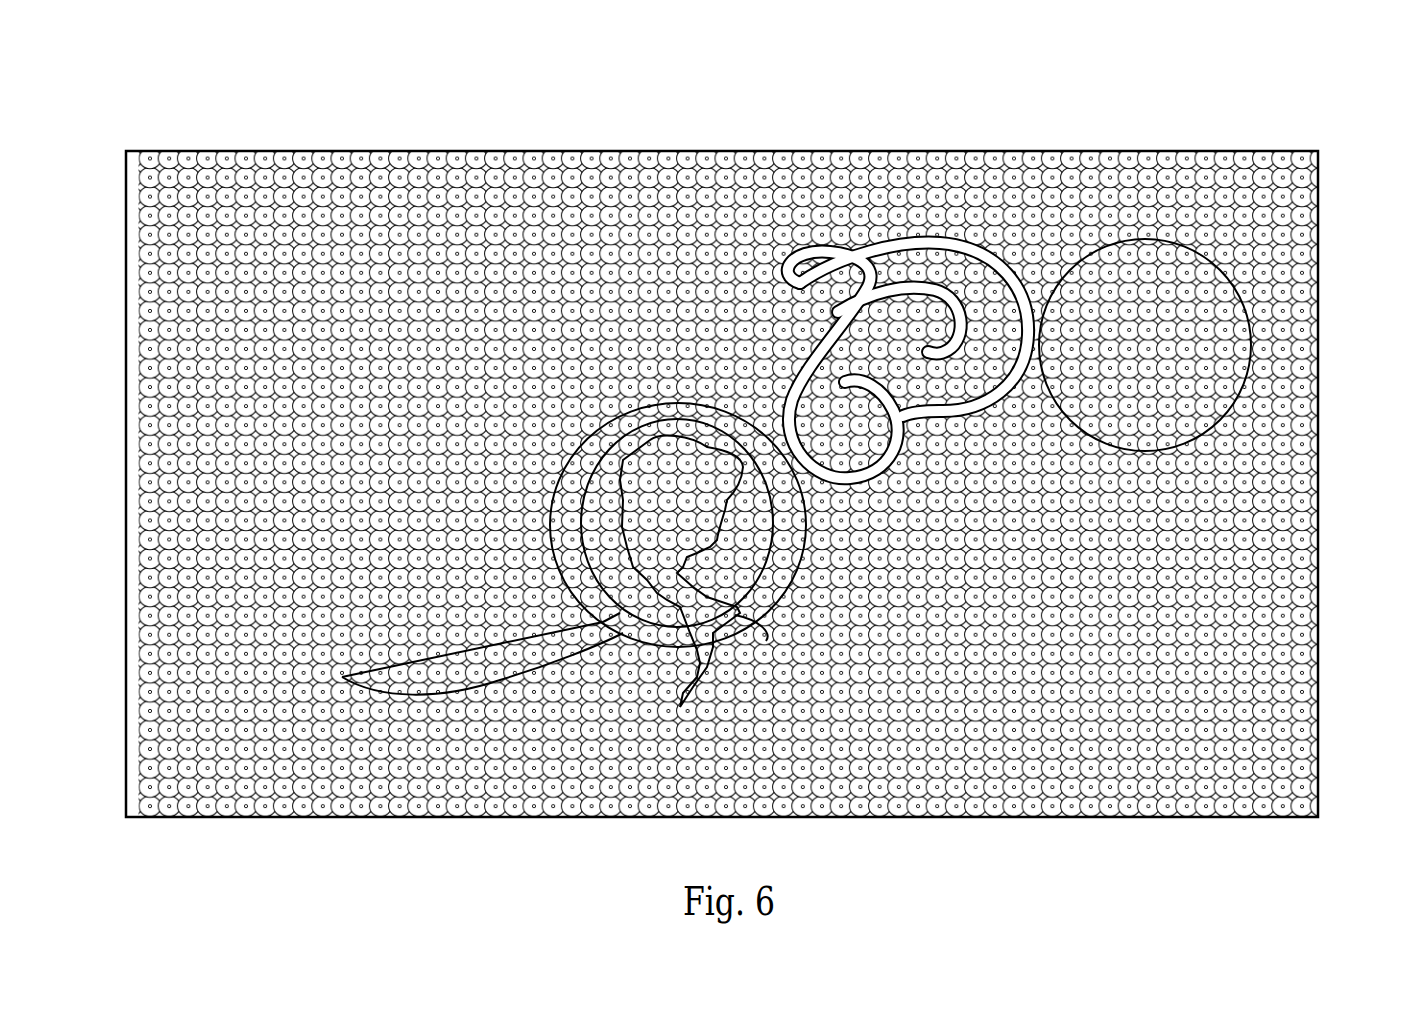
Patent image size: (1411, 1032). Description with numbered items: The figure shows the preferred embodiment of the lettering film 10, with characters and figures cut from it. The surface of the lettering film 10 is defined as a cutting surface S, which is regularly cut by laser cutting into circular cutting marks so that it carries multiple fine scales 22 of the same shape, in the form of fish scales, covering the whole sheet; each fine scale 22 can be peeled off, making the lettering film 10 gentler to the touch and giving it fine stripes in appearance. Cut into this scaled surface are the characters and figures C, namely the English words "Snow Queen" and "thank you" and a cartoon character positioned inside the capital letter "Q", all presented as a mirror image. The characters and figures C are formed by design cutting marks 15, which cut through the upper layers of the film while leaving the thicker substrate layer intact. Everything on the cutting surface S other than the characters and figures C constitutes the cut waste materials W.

The lettering film 10 is at (725, 422).
The fine scales 22 is at (340, 173).
The cutting surface S is at (145, 268).
The characters and figures C is at (767, 493).
The design cutting marks 15 is at (882, 240).
The cut waste materials W is at (185, 712).